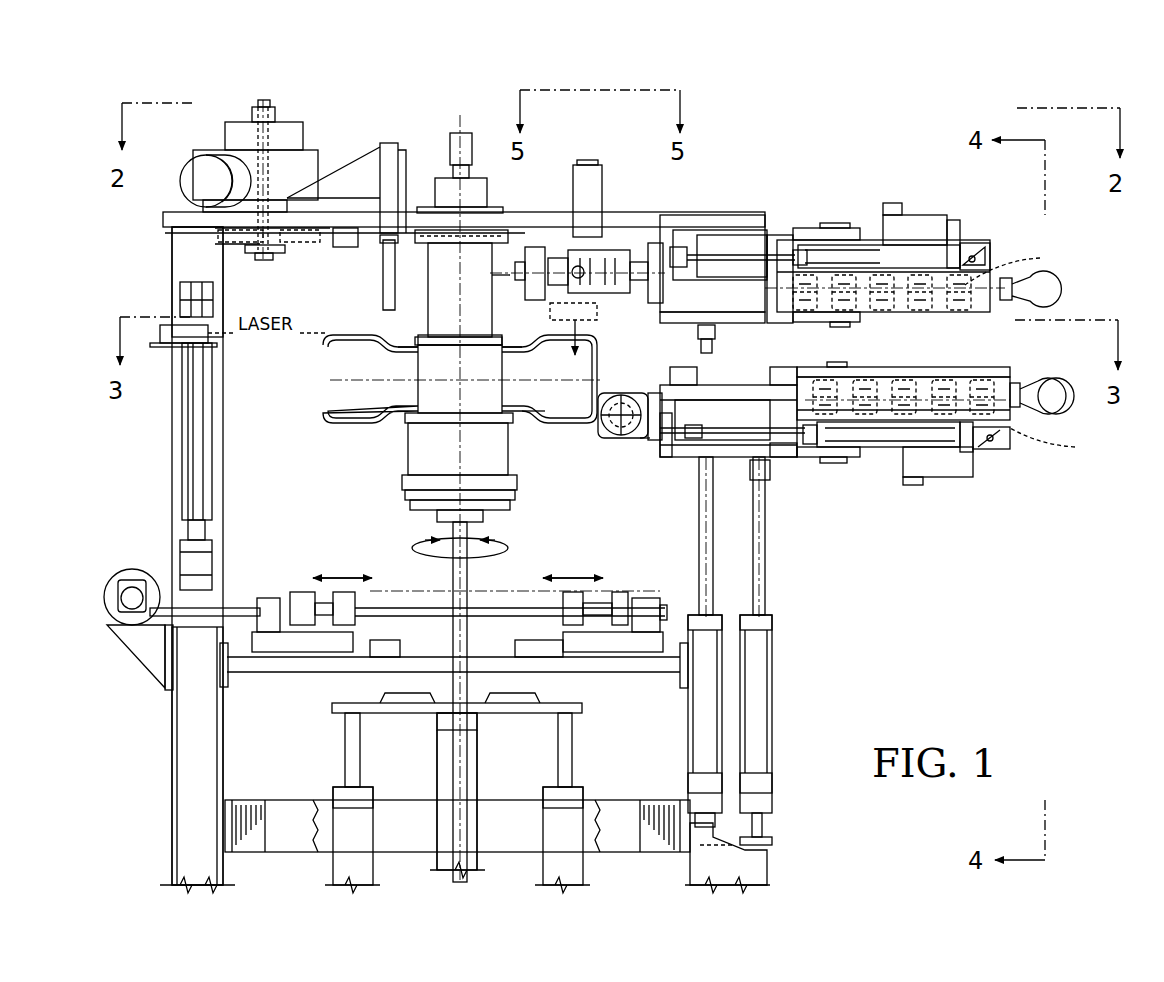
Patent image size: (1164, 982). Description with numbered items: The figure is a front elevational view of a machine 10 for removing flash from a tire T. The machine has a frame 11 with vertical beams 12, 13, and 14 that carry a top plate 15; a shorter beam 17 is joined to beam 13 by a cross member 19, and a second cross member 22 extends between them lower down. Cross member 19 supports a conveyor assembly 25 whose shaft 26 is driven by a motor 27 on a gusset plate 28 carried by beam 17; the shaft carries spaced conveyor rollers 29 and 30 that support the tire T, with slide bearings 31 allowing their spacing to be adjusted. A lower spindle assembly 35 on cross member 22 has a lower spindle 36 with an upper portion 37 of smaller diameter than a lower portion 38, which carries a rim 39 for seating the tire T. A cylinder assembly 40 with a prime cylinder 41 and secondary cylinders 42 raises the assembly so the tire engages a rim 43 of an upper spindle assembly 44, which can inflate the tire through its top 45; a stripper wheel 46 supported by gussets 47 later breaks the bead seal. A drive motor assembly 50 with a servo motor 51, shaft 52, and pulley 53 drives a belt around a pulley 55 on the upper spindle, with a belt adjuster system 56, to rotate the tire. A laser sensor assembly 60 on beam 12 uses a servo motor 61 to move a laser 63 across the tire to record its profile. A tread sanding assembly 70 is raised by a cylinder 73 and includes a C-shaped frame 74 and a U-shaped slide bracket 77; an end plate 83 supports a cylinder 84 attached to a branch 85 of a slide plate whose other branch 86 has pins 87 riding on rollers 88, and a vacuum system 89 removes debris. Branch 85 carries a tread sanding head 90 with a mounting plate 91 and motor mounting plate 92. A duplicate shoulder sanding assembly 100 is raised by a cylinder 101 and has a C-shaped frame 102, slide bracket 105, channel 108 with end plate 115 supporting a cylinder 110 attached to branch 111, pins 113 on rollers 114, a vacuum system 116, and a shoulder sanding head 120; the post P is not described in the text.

The machine 10 is at (1022, 655).
The frame 11 is at (706, 212).
The vertical beam 12 is at (222, 466).
The vertical beam 13 is at (755, 882).
The vertical beam 14 is at (698, 552).
The top plate 15 is at (170, 212).
The shorter vertical beam 17 is at (190, 768).
The cross member 19 is at (432, 665).
The second cross member 22 is at (278, 822).
The conveyor assembly 25 is at (280, 580).
The shaft 26 is at (505, 610).
The motor 27 is at (118, 585).
The gusset plate 28 is at (150, 665).
The conveyor rollers 29 is at (342, 622).
The conveyor rollers 30 is at (617, 622).
The slide bearings 31 is at (270, 645).
The lower chuck or spindle assembly 35 is at (425, 522).
The lower spindle 36 is at (412, 458).
The upper portion 37 is at (445, 395).
The lower portion 38 is at (475, 435).
The rim 39 is at (527, 418).
The cylinder assembly 40 is at (490, 765).
The prime cylinder 41 is at (440, 760).
The secondary cylinders 42 is at (338, 858).
The rim 43 is at (408, 346).
The upper spindle assembly 44 is at (450, 292).
The top 45 is at (470, 150).
The cylinder activated stripper wheel 46 is at (386, 150).
The gussets 47 is at (352, 178).
The drive motor assembly 50 is at (240, 100).
The servo motor 51 is at (195, 176).
The shaft 52 is at (250, 268).
The pulley 53 is at (320, 248).
The pulley 55 is at (510, 238).
The belt adjuster system 56 is at (345, 252).
The laser sensor assembly 60 is at (188, 428).
The servo motor 61 is at (195, 570).
The laser 63 is at (190, 335).
The tire tread sanding assembly 70 is at (908, 512).
The cylinder 73 is at (768, 690).
The C-shaped frame 74 is at (857, 372).
The U-shaped slide bracket 77 is at (1000, 378).
The end plate 83 is at (1008, 440).
The cylinder 84 is at (905, 470).
The branch 85 is at (668, 445).
The branch 86 is at (775, 395).
The cylindrical pins 87 is at (735, 400).
The rollers 88 is at (1058, 445).
The vacuum system 89 is at (1062, 400).
The tread sanding head 90 is at (602, 450).
The mounting plate 91 is at (655, 405).
The motor mounting plate 92 is at (642, 442).
The tire shoulder sanding assembly 100 is at (908, 188).
The cylinder 101 is at (695, 758).
The C-shaped frame 102 is at (812, 235).
The U-shaped slide bracket 105 is at (930, 318).
The U-shaped channel 108 is at (693, 318).
The cylinder 110 is at (885, 260).
The branch 111 is at (665, 278).
The cylindrical pins 113 is at (733, 283).
The rollers 114 is at (1045, 258).
The end plate 115 is at (988, 250).
The vacuum system 116 is at (1050, 298).
The shoulder sanding head 120 is at (605, 248).
The post P is at (185, 270).
The tire T is at (322, 393).